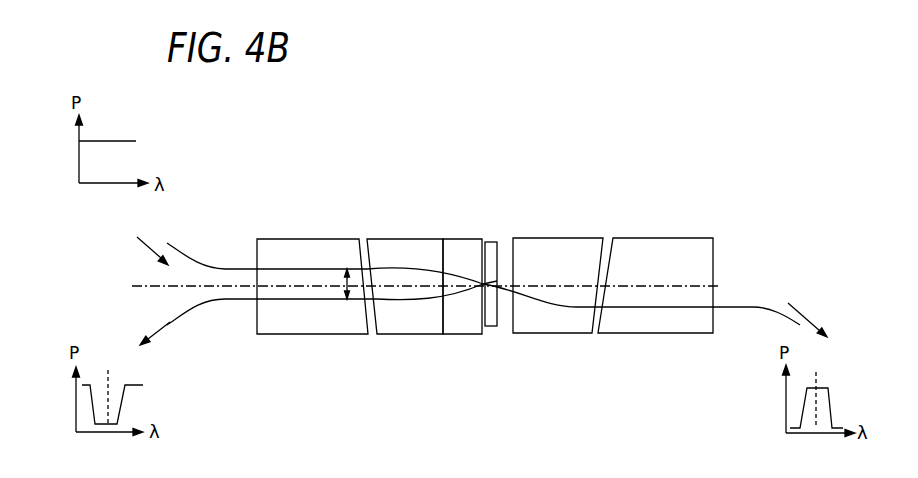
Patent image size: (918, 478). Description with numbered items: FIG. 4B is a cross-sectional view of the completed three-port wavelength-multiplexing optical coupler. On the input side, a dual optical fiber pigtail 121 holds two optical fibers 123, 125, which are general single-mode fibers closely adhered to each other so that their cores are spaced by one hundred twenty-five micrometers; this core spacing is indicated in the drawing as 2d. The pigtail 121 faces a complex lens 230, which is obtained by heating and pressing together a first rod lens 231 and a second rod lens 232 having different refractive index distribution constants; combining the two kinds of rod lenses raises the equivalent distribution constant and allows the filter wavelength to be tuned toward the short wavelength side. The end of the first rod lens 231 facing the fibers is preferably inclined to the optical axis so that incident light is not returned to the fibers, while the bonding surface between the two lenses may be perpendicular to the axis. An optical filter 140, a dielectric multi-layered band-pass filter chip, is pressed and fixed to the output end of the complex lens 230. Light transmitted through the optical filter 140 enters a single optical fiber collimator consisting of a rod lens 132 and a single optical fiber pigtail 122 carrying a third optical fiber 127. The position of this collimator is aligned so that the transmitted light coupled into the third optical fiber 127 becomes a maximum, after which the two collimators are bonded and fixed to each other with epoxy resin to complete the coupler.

The dual optical fiber pigtail 121 is at (272, 247).
The single optical fiber pigtail 122 is at (660, 242).
The optical fiber 123 is at (192, 260).
The optical fiber 125 is at (197, 303).
The third optical fiber 127 is at (752, 303).
The rod lens 132 is at (562, 242).
The BPF chip (optical filter) 140 is at (490, 247).
The complex lens 230 is at (425, 287).
The first rod lens 231 is at (382, 247).
The second rod lens 232 is at (458, 247).
The waveguide separation distance 2d is at (347, 262).